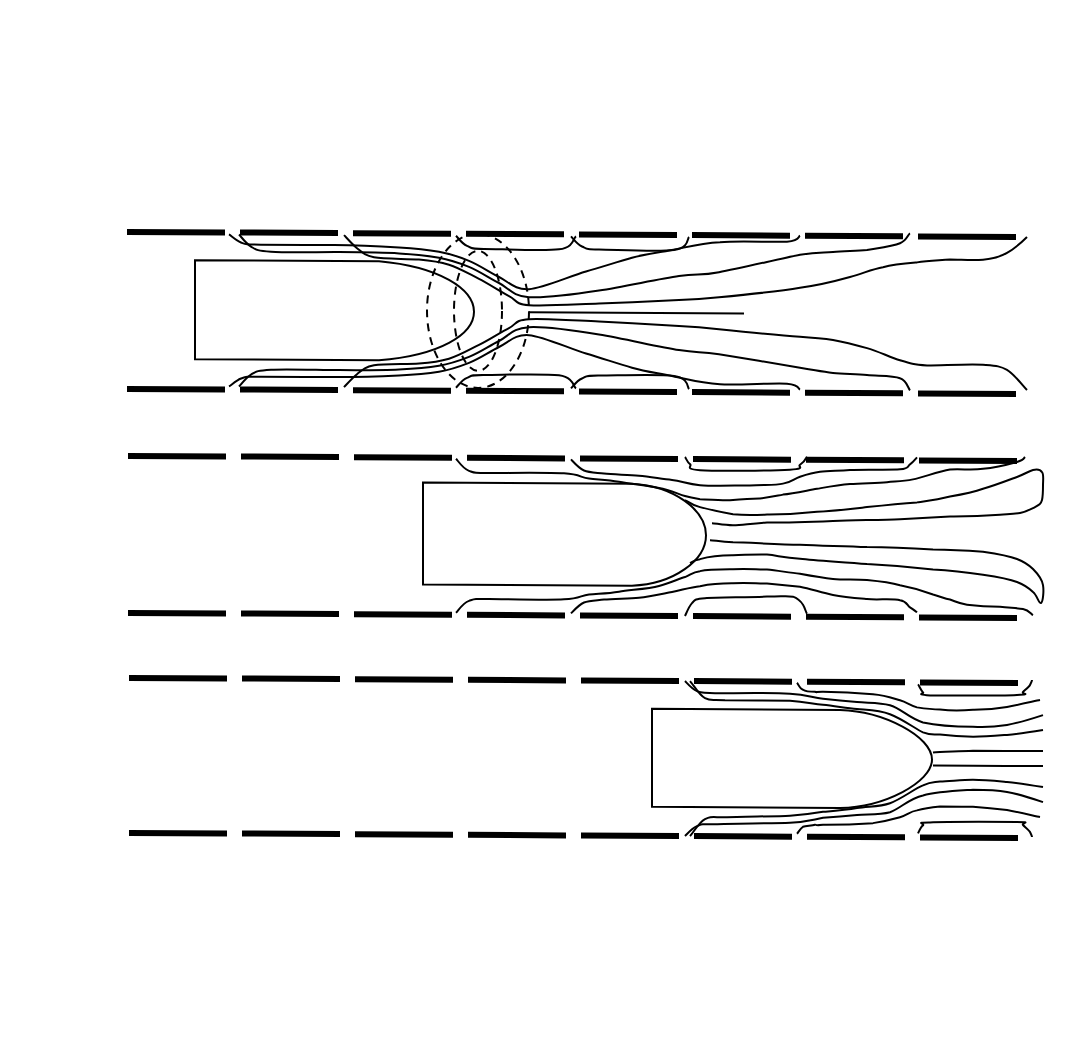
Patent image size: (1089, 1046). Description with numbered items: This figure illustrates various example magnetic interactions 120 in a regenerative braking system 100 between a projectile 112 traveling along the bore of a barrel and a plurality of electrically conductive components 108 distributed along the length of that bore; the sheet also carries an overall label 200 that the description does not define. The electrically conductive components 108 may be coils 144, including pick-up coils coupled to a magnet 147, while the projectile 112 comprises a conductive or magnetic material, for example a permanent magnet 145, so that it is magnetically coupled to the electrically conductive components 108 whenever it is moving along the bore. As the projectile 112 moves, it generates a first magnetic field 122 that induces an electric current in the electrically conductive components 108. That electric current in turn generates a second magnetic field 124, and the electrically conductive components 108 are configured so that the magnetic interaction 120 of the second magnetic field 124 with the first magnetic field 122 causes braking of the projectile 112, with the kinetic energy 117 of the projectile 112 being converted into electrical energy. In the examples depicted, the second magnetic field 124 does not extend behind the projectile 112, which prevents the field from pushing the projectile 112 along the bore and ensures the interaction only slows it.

The regenerative braking system 100 is at (208, 133).
The sorting system 200 is at (208, 133).
The magnetic interaction 120 is at (380, 173).
The first magnetic field 122 is at (509, 224).
The second magnetic field 124 is at (638, 236).
The electrically conductive components 108 is at (733, 233).
The coils 144 is at (733, 233).
The magnet 147 is at (733, 233).
The projectile 112 is at (334, 310).
The permanent magnet 145 is at (564, 535).
The kinetic energy 117 is at (564, 535).